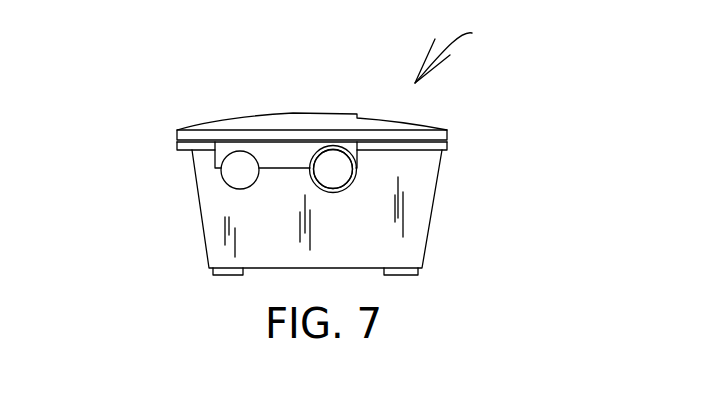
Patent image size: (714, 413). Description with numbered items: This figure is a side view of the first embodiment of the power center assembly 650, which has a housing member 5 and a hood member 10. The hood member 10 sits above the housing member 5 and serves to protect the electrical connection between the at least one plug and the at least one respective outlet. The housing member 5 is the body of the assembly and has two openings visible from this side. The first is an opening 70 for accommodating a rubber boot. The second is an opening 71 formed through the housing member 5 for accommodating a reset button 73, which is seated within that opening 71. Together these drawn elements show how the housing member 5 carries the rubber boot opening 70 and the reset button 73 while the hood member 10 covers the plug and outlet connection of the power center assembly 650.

The hood member 10 is at (318, 113).
The housing member 5 is at (205, 250).
The opening 70 is at (240, 166).
The opening 71 is at (358, 163).
The reset button 73 is at (335, 178).
The power center assembly 650 is at (472, 33).